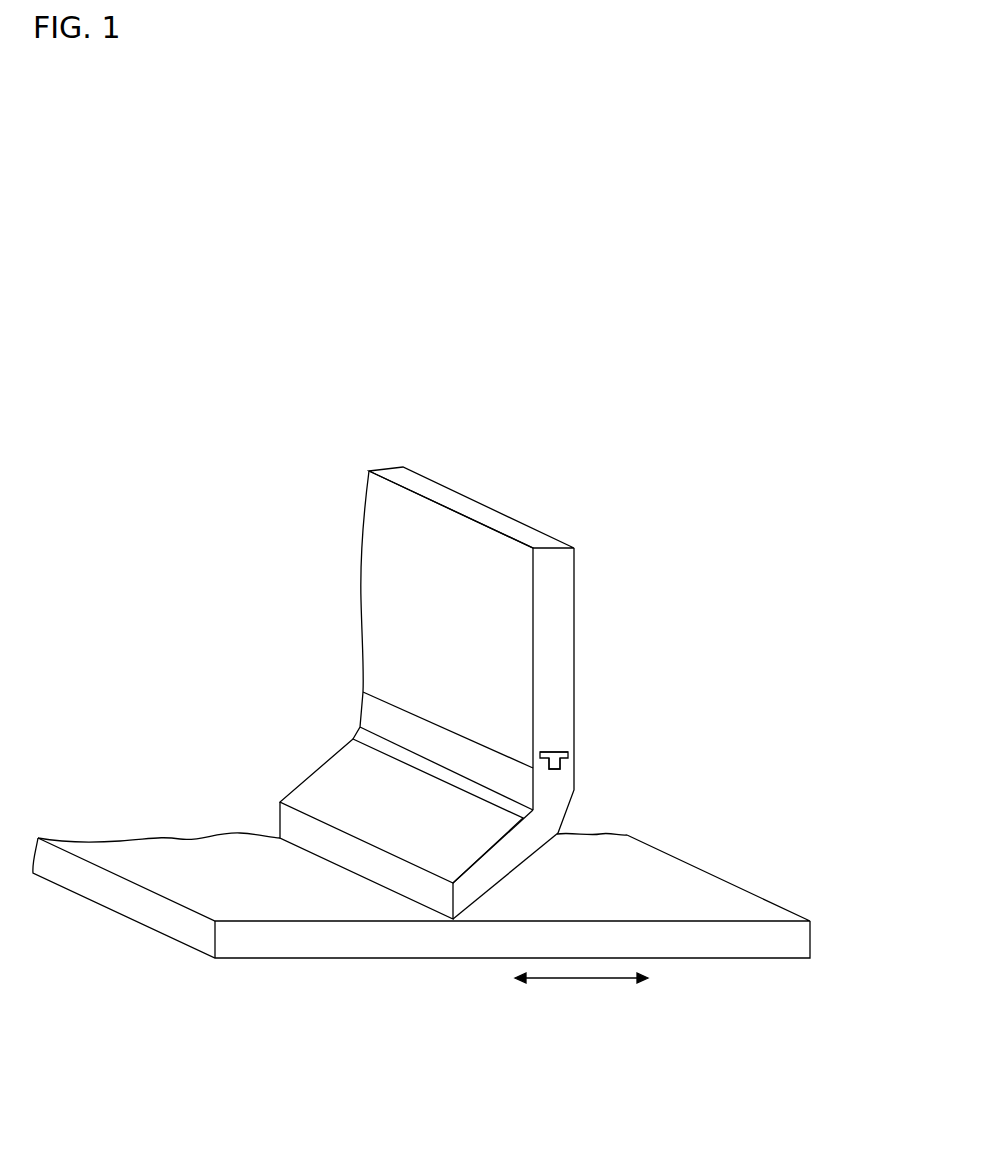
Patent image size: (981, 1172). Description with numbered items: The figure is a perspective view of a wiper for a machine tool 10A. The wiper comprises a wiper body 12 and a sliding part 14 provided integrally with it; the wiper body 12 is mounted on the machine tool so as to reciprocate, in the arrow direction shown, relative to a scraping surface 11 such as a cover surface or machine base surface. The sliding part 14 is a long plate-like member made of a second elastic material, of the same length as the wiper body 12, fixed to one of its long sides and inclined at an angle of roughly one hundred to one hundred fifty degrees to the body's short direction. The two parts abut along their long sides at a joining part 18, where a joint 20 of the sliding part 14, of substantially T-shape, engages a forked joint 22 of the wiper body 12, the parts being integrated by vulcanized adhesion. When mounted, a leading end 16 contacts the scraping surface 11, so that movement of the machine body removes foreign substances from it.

The wiper for a machine tool 10A is at (573, 513).
The scraping surface 11 is at (713, 895).
The wiper body 12 is at (373, 597).
The sliding part 14 is at (353, 773).
The leading end 16 is at (347, 873).
The joining part 18 is at (578, 753).
The joint 20 is at (557, 767).
The joint 22 is at (570, 768).